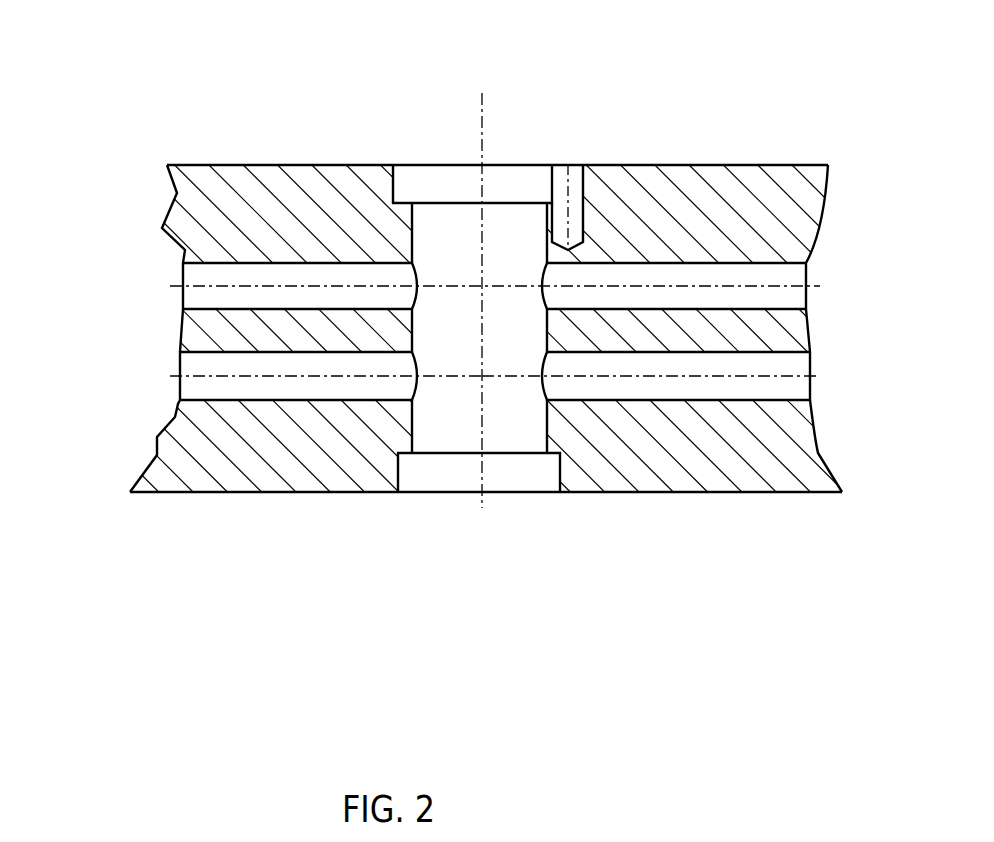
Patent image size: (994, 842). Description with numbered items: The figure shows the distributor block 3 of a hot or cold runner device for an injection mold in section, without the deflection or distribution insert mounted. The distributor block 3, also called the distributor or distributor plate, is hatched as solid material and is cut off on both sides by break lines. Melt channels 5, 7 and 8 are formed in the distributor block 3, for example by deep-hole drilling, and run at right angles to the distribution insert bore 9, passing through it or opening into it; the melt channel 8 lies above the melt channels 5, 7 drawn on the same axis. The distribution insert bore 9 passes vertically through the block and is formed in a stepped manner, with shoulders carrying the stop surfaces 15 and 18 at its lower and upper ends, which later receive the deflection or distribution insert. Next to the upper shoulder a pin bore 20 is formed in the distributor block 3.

The distributor block 3 is at (748, 452).
The melt channel 5 is at (187, 363).
The melt channel 7 is at (767, 365).
The melt channel 8 is at (787, 278).
The distribution insert bore 9 is at (546, 328).
The stop surface 15 is at (552, 455).
The stop surface 18 is at (399, 200).
The pin bore 20 is at (572, 232).